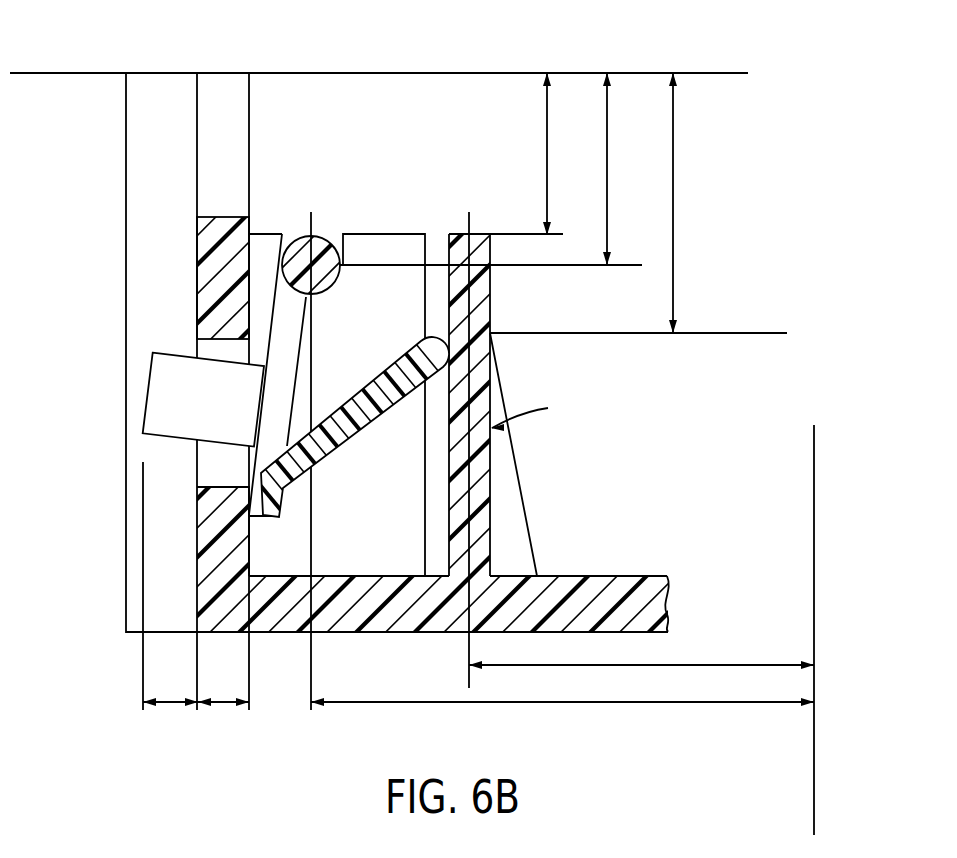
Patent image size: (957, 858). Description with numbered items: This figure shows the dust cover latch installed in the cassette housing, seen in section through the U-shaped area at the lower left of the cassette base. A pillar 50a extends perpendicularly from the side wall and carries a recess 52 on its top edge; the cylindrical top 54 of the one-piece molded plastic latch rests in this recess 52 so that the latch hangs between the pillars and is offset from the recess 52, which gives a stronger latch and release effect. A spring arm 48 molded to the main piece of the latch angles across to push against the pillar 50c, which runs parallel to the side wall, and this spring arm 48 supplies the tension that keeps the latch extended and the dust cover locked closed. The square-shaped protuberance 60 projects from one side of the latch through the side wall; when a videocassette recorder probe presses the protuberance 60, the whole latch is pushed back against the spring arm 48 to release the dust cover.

The spring arm 48 is at (372, 418).
The pillar 50a is at (372, 245).
The pillar 50c is at (460, 244).
The recess 52 is at (205, 278).
The cylindrical top 54 is at (303, 237).
The square-shaped protuberance 60 is at (155, 393).